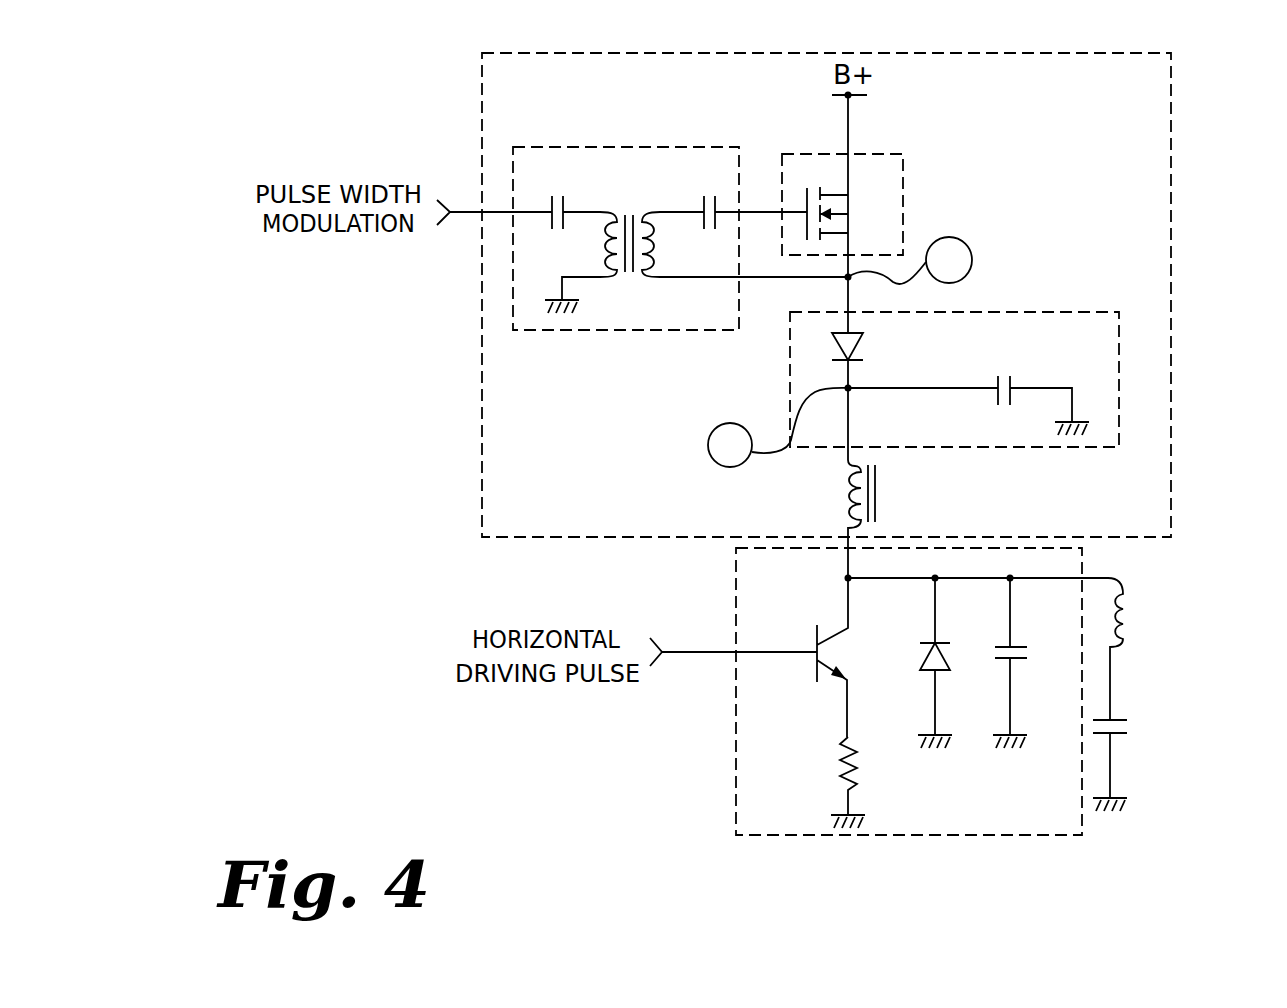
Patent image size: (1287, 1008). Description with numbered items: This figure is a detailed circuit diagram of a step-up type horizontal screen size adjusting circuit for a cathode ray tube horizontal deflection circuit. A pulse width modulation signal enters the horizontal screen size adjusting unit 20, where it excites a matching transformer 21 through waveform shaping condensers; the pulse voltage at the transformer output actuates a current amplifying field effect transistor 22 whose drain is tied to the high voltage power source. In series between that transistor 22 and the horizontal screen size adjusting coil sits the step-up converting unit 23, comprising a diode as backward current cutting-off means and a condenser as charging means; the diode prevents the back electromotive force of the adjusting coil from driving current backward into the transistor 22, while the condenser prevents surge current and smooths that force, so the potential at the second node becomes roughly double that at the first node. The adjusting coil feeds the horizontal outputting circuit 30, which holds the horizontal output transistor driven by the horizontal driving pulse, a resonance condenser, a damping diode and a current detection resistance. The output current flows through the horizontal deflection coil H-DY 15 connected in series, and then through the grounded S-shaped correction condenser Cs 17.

The horizontal screen size adjusting unit 20 is at (482, 360).
The matching transformer 21 is at (636, 330).
The current amplifying field effect transistor 22 is at (903, 194).
The step-up converting unit 23 is at (1071, 313).
The horizontal outputting circuit 30 is at (736, 573).
The horizontal deflection coil H-DY 15 is at (1189, 649).
The condenser Cs 17 is at (1156, 765).